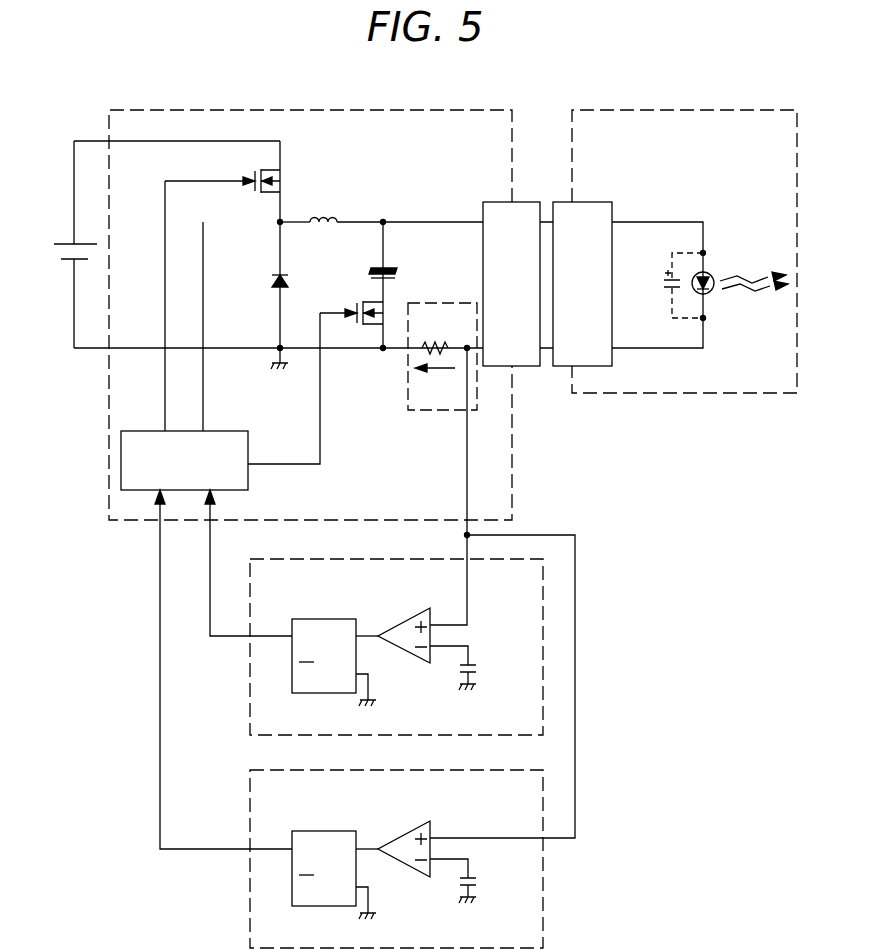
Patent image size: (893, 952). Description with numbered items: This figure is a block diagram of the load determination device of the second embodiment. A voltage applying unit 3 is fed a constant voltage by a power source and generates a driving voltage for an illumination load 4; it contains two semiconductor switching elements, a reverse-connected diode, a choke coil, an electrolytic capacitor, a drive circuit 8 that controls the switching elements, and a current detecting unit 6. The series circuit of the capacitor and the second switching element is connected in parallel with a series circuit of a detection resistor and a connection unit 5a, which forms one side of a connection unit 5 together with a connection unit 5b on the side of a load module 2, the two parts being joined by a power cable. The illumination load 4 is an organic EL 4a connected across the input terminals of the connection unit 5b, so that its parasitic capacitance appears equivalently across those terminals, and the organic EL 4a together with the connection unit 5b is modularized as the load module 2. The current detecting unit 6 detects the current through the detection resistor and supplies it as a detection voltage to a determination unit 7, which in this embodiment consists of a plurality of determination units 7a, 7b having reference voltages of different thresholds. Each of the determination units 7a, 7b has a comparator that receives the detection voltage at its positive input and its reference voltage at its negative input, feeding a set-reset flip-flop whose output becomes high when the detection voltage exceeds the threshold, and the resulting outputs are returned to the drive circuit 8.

The load module 2 is at (737, 108).
The voltage applying unit 3 is at (478, 109).
The illumination load 4 is at (730, 240).
The organic EL 4a is at (713, 293).
The connection unit 5 is at (550, 436).
The connection unit 5a is at (525, 366).
The connection unit 5b is at (587, 366).
The current detecting unit 6 is at (440, 303).
The determination unit 7 is at (616, 735).
The determination unit 7a is at (543, 786).
The determination unit 7b is at (543, 722).
The drive circuit 8 is at (225, 431).